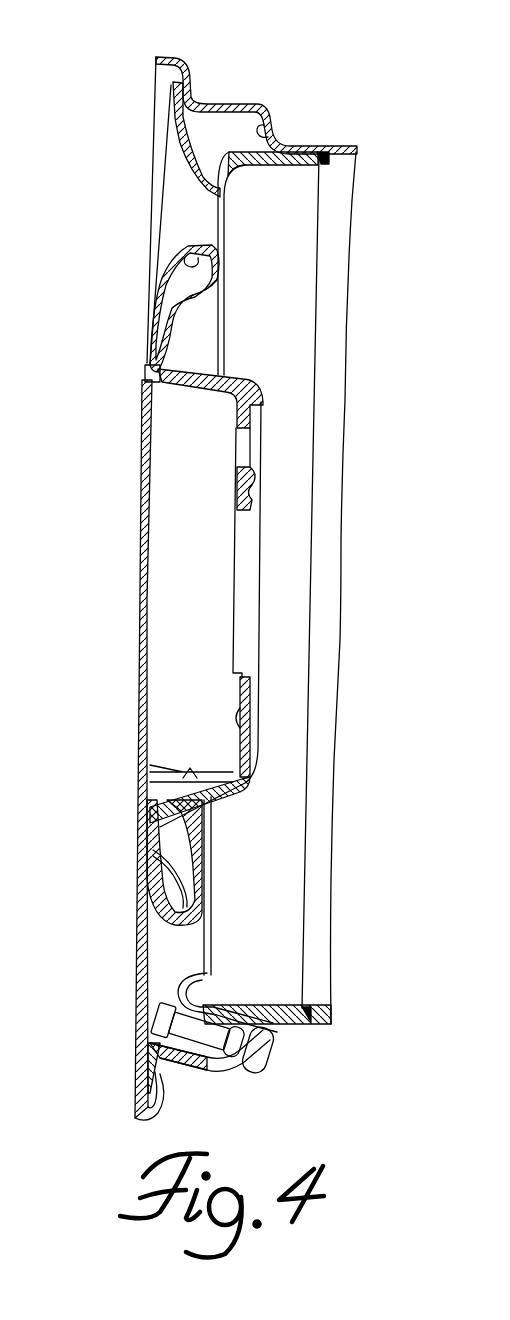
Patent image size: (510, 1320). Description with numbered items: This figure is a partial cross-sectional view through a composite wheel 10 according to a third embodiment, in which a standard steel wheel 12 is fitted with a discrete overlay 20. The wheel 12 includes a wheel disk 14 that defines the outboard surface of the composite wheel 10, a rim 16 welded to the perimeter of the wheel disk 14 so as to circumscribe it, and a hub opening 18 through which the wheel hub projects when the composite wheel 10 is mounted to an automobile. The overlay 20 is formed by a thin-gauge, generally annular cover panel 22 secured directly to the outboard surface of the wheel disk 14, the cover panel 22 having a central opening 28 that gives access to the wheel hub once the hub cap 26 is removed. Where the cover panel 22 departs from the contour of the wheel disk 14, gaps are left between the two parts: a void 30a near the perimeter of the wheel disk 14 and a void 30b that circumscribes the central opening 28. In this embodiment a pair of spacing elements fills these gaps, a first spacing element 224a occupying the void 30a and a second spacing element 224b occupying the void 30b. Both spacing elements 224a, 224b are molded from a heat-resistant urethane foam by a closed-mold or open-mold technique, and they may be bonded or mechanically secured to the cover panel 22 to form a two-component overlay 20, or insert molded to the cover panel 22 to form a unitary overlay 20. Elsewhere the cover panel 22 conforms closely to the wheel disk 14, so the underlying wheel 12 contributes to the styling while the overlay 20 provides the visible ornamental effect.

The composite wheel 10 is at (145, 96).
The wheel 12 is at (343, 759).
The wheel disk 14 is at (224, 788).
The rim 16 is at (187, 70).
The hub opening 18 is at (247, 512).
The overlay 20 is at (163, 925).
The cover panel 22 is at (147, 884).
The hub cap 26 is at (138, 593).
The central opening 28 is at (229, 674).
The void 30a is at (280, 133).
The void 30b is at (190, 258).
The first spacing element 224a is at (217, 133).
The second spacing element 224b is at (177, 283).